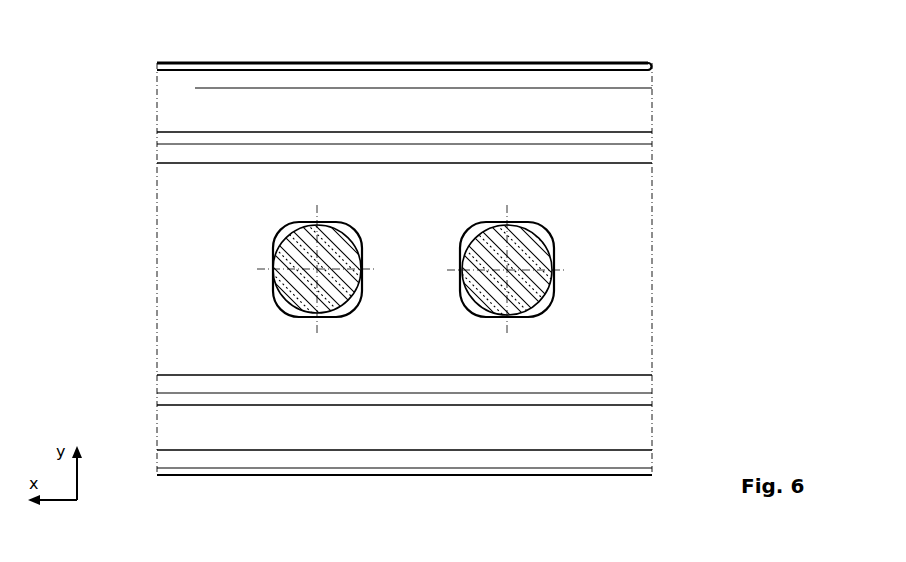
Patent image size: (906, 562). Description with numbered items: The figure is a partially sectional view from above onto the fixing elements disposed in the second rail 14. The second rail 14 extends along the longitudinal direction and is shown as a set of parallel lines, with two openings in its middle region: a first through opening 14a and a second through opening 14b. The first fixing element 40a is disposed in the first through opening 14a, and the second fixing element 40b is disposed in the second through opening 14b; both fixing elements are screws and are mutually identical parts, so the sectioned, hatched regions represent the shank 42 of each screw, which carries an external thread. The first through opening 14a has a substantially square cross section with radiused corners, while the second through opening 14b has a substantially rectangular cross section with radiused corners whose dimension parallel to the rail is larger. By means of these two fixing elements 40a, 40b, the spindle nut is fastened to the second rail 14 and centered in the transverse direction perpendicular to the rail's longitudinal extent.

The second rail 14 is at (193, 118).
The first through opening 14a is at (280, 232).
The second through opening 14b is at (540, 232).
The first fixing element 40a is at (246, 265).
The second fixing element 40b is at (578, 266).
The shank 42 is at (409, 266).